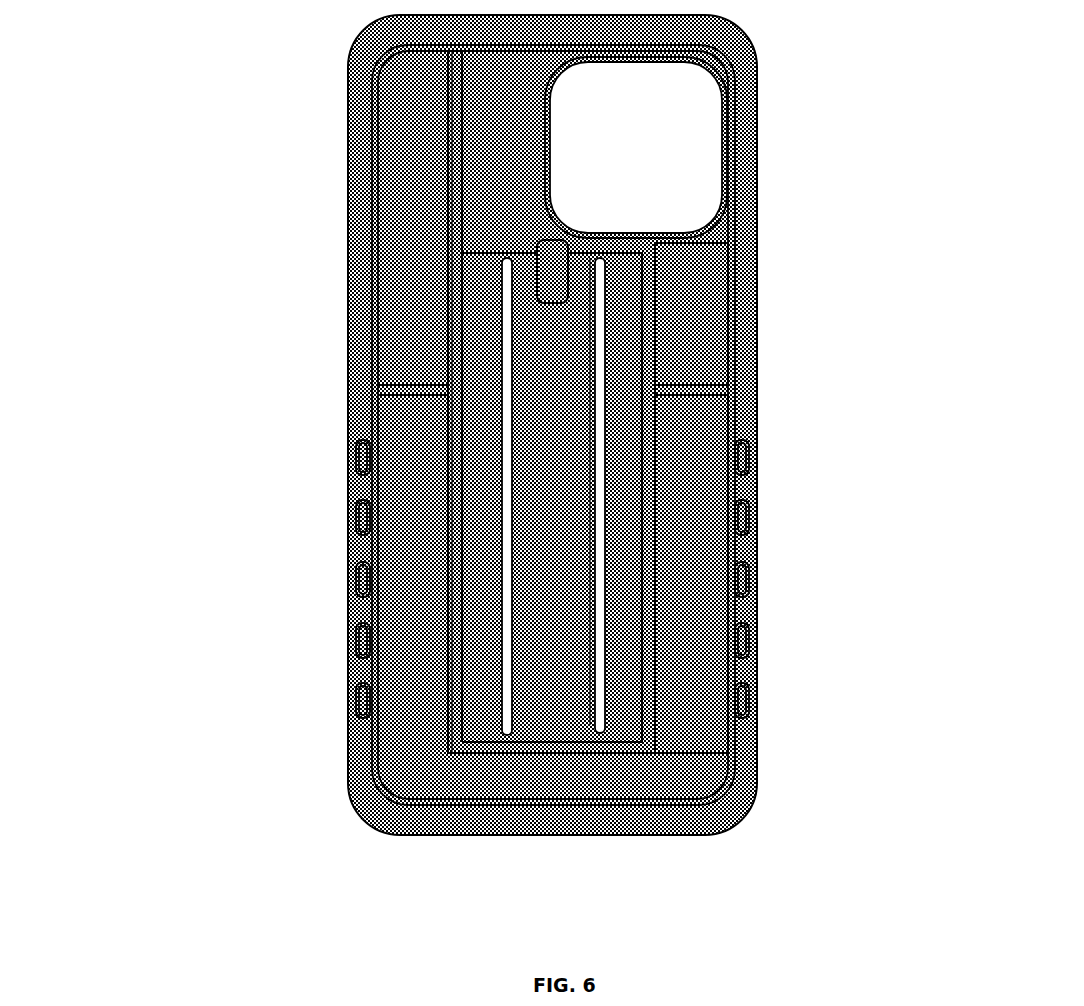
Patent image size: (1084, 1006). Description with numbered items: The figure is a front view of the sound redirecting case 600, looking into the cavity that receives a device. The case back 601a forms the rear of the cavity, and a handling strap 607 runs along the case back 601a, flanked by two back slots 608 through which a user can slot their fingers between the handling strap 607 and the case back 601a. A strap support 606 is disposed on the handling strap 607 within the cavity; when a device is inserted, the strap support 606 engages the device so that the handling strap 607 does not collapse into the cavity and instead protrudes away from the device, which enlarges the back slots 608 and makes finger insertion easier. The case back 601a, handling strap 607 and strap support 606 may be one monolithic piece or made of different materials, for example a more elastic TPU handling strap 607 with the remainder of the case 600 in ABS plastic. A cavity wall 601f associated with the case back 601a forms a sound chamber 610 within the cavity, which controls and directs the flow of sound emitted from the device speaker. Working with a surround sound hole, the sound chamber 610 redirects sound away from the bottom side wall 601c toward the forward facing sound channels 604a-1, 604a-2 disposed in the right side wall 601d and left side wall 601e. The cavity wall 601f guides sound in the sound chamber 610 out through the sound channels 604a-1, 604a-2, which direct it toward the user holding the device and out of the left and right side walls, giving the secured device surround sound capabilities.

The sound redirecting case 600 is at (178, 110).
The case back 601a is at (688, 302).
The bottom side wall 601c is at (652, 820).
The right side wall 601d is at (773, 426).
The left side wall 601e is at (330, 411).
The cavity wall 601f is at (652, 708).
The forward facing sound channels 604a-1 is at (753, 462).
The forward facing sound channels 604a-2 is at (352, 460).
The strap support 606 is at (545, 270).
The handling strap 607 is at (555, 680).
The back slots 608 is at (507, 695).
The sound chamber 610 is at (710, 555).